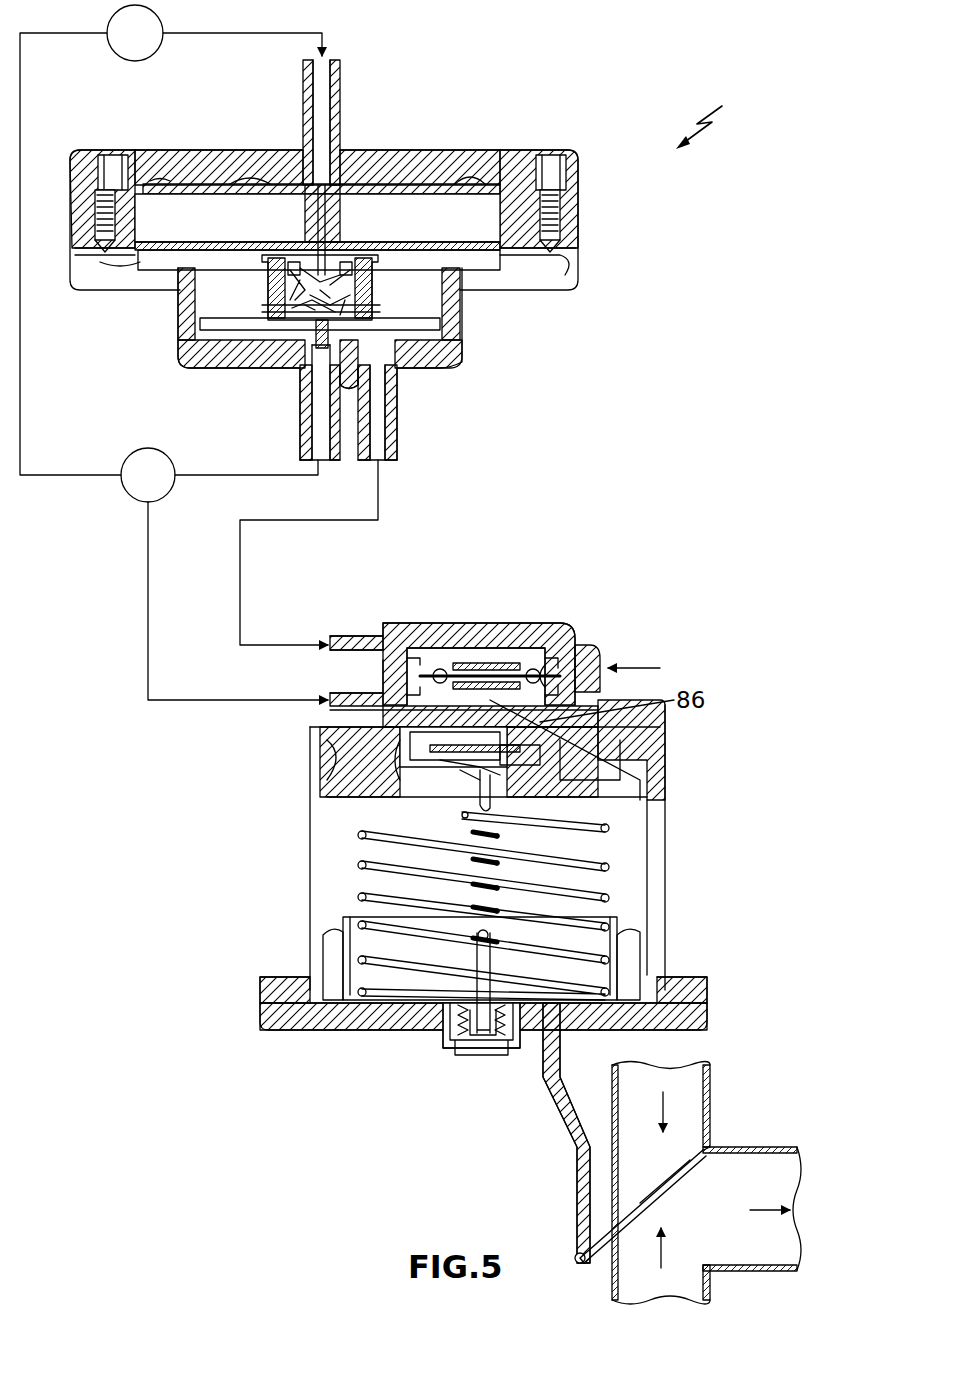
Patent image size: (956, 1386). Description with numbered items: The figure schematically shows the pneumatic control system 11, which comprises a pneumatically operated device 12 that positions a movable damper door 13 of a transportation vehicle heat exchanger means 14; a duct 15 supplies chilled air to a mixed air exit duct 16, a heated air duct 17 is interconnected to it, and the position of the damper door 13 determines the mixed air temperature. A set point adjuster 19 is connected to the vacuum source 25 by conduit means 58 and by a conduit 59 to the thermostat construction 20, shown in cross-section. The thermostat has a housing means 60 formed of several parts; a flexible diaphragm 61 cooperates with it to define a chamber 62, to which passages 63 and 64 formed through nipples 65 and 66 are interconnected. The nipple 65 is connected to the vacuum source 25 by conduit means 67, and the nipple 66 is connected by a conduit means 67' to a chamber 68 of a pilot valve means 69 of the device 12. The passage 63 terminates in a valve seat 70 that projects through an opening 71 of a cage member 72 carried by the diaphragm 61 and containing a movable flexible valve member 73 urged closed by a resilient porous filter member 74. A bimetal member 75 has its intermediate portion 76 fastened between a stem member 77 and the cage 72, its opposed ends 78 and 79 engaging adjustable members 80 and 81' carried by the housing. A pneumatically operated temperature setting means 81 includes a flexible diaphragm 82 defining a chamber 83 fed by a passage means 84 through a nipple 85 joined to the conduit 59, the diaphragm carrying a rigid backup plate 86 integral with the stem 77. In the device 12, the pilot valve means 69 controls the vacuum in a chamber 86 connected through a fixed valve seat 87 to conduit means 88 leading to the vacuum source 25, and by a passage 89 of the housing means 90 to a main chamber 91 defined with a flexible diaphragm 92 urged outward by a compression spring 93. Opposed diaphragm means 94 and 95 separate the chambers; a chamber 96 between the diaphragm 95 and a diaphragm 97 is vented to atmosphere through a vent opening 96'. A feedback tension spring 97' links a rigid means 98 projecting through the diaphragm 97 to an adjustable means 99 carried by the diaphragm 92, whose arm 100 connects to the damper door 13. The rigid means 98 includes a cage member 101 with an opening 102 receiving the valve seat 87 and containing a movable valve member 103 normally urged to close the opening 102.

The pneumatic control system 11 is at (714, 121).
The pneumatically operated device 12 is at (670, 800).
The damper door 13 is at (668, 1188).
The heat exchanger means 14 is at (742, 1120).
The duct 15 is at (712, 1082).
The mixed air exit duct 16 is at (772, 1146).
The heated air duct 17 is at (712, 1292).
The set point adjuster 19 is at (170, 22).
The thermostat construction 20 is at (416, 128).
The vacuum source 25 is at (123, 462).
The conduit means 58 is at (22, 392).
The conduit 59 is at (268, 33).
The housing means 60 is at (565, 214).
The flexible diaphragm 61 is at (445, 320).
The chamber 62 is at (265, 335).
The passage 63 is at (312, 420).
The passage 64 is at (396, 420).
The nipple 65 is at (310, 445).
The nipple 66 is at (396, 450).
The conduit means 67 is at (246, 486).
The conduit means 67' is at (309, 552).
The chamber 68 is at (505, 640).
The pilot valve means 69 is at (598, 648).
The valve seat 70 is at (308, 332).
The opening 71 is at (395, 362).
The cage member 72 is at (275, 315).
The movable flexible valve member 73 is at (345, 308).
The porous filter member 74 is at (270, 285).
The bimetal member 75 is at (408, 246).
The intermediate portion 76 is at (342, 236).
The stem member 77 is at (305, 205).
The end 78 is at (112, 256).
The end 79 is at (540, 258).
The adjustable member 80 is at (95, 215).
The adjustable temperature setting means 81 is at (322, 147).
The adjustable member 81' is at (361, 236).
The flexible diaphragm 82 is at (488, 185).
The chamber 83 is at (180, 160).
The passage means 84 is at (331, 104).
The nipple 85 is at (342, 72).
The diaphragm backup plate 86 is at (272, 170).
The fixed valve seat 87 is at (540, 712).
The conduit means 88 is at (242, 692).
The passage 89 is at (640, 742).
The housing means 90 is at (666, 846).
The main chamber 91 is at (630, 888).
The flexible diaphragm 92 is at (640, 938).
The compression spring 93 is at (625, 870).
The diaphragm means 94 is at (455, 655).
The diaphragm means 95 is at (330, 762).
The chamber 96 is at (592, 760).
The vent opening 96' is at (326, 749).
The diaphragm 97 is at (534, 760).
The feedback tension spring 97' is at (528, 884).
The rigid means 98 is at (460, 800).
The adjustable means 99 is at (455, 1030).
The arm 100 is at (578, 1183).
The cage member 101 is at (420, 740).
The opening 102 is at (560, 718).
The movable valve member 103 is at (470, 760).